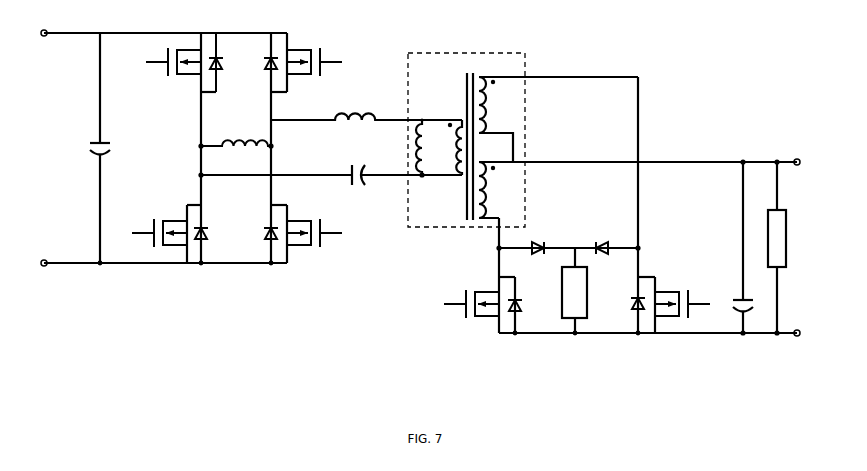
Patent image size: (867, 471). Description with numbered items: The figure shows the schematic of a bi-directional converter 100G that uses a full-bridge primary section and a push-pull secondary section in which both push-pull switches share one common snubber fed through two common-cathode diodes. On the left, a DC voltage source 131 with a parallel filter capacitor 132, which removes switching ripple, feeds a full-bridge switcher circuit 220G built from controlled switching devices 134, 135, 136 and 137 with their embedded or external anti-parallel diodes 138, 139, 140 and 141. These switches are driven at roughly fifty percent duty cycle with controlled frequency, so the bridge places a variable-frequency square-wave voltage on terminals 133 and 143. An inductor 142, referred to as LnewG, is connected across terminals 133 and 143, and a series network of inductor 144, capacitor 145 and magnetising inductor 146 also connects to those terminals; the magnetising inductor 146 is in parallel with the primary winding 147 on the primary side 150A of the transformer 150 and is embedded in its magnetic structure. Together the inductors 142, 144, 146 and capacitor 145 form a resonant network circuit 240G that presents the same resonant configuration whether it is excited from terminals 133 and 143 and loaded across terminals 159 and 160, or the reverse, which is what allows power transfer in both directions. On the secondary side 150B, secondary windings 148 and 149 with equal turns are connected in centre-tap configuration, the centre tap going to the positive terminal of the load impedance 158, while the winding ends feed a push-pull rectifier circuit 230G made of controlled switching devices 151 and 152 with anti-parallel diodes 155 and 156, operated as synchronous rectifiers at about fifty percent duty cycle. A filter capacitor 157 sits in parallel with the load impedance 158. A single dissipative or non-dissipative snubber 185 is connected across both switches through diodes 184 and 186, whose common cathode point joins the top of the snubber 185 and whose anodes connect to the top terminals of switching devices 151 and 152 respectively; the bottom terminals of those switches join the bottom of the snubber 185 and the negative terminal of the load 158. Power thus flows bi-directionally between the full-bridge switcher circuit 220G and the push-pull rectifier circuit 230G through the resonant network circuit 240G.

The bi-directional converter 100G is at (383, 57).
The DC voltage source 131 is at (53, 38).
The filter capacitor 132 is at (106, 142).
The terminal 133 is at (199, 149).
The controlled switching device 134 is at (166, 64).
The controlled switching device 135 is at (154, 230).
The controlled switching device 136 is at (321, 57).
The controlled switching device 137 is at (319, 249).
The anti-parallel diode 138 is at (220, 60).
The anti-parallel diode 139 is at (206, 226).
The anti-parallel diode 140 is at (268, 60).
The anti-parallel diode 141 is at (268, 226).
The inductor 142 is at (240, 141).
The terminal 143 is at (274, 146).
The inductor 144 is at (356, 119).
The capacitor 145 is at (357, 186).
The magnetising inductor 146 is at (418, 152).
The primary winding 147 is at (458, 140).
The secondary winding 148 is at (486, 118).
The secondary winding 149 is at (487, 190).
The transformer 150 is at (467, 52).
The primary side 150A is at (436, 220).
The secondary side 150B is at (515, 80).
The controlled switching device 151 is at (481, 320).
The controlled switching device 152 is at (659, 289).
The anti-parallel diode 155 is at (516, 314).
The anti-parallel diode 156 is at (637, 313).
The filter capacitor 157 is at (741, 298).
The load impedance 158 is at (788, 233).
The terminal 159 is at (427, 118).
The terminal 160 is at (424, 178).
The diode 184 is at (538, 240).
The snubber 185 is at (589, 297).
The diode 186 is at (603, 240).
The full-bridge switcher circuit 220G is at (229, 278).
The push-pull rectifier circuit 230G is at (578, 352).
The resonant network circuit 240G is at (383, 218).